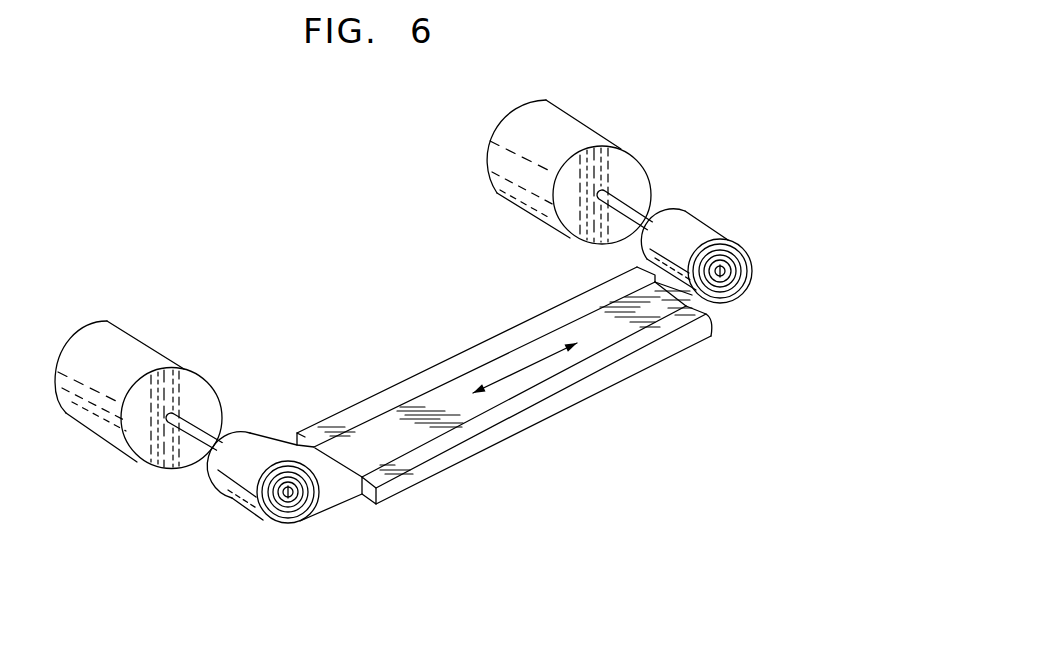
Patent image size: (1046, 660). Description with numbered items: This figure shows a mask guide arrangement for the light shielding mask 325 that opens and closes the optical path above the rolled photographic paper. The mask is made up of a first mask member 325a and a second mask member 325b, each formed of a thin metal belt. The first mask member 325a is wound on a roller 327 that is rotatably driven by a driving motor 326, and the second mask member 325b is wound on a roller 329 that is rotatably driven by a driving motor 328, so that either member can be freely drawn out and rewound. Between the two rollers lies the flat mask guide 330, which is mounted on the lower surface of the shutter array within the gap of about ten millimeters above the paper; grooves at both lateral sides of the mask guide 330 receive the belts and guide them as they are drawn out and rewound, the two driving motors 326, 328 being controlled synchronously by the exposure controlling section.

The light shielding mask 325 is at (240, 396).
The first mask member 325a is at (337, 493).
The second mask member 325b is at (652, 307).
The driving motor 326 is at (110, 427).
The roller 327 is at (289, 497).
The driving motor 328 is at (582, 128).
The roller 329 is at (722, 277).
The mask guide 330 is at (550, 408).